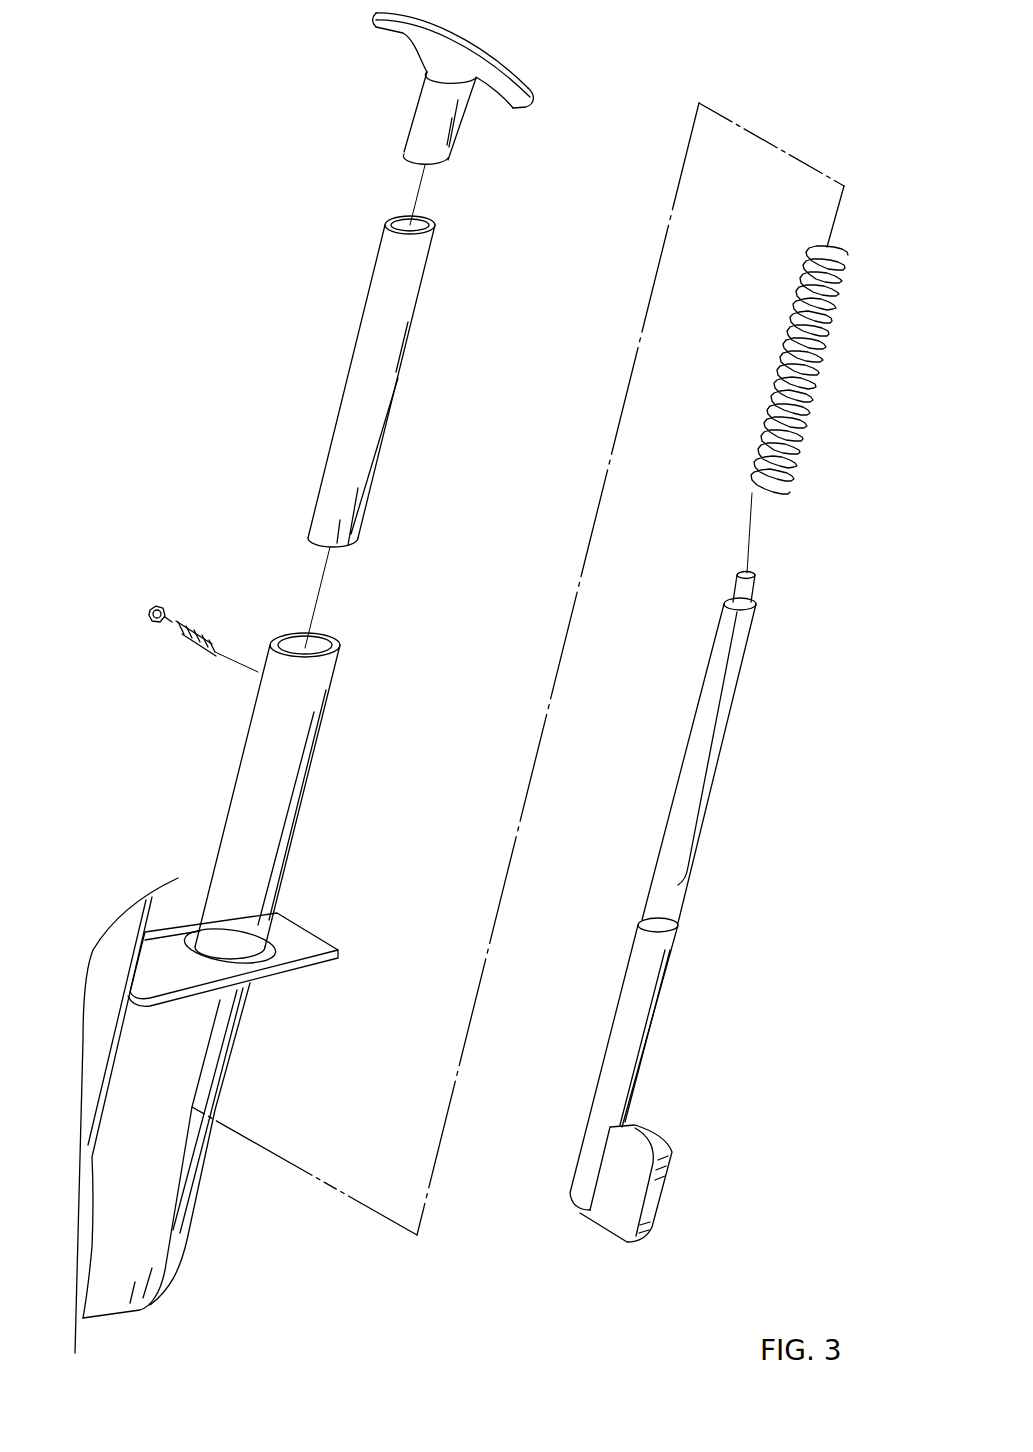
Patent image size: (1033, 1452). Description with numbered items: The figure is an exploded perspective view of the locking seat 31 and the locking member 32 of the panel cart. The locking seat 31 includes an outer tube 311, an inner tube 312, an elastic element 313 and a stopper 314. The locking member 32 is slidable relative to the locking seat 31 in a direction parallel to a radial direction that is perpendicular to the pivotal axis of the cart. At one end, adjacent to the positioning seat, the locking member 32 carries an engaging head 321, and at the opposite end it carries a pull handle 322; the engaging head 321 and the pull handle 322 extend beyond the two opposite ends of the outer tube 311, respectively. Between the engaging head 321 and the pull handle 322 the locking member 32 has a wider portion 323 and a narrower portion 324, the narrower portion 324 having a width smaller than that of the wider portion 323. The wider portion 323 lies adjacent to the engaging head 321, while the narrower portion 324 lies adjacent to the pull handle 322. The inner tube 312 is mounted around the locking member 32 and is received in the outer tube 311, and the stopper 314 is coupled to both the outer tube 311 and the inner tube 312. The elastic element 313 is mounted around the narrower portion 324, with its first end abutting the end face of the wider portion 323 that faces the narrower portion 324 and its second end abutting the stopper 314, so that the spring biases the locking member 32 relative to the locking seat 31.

The locking seat 31 is at (150, 1245).
The outer tube 311 is at (273, 787).
The inner tube 312 is at (377, 378).
The elastic element 313 is at (805, 413).
The stopper 314 is at (197, 622).
The locking member 32 is at (734, 744).
The engaging head 321 is at (622, 1190).
The pull handle 322 is at (485, 55).
The wider portion 323 is at (627, 1052).
The narrower portion 324 is at (687, 795).